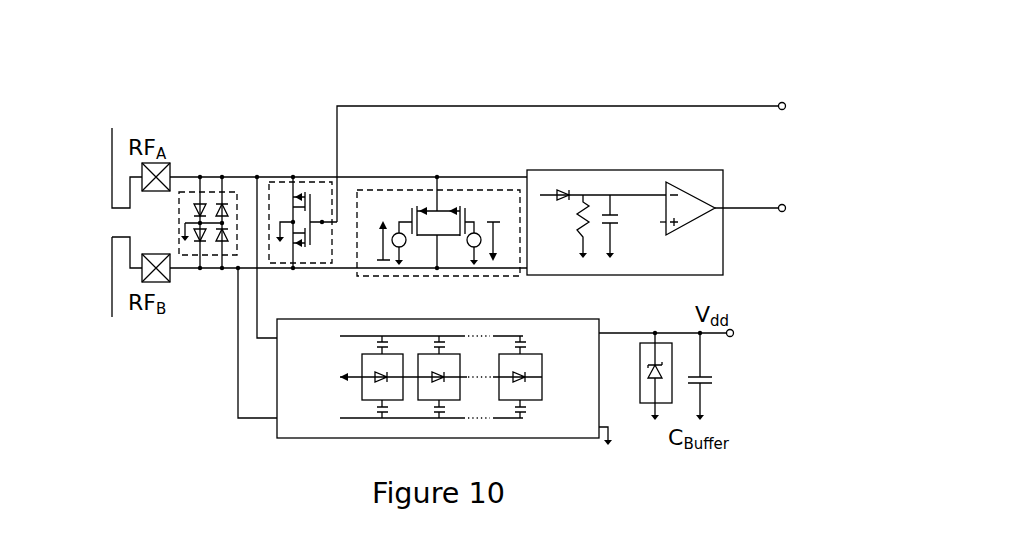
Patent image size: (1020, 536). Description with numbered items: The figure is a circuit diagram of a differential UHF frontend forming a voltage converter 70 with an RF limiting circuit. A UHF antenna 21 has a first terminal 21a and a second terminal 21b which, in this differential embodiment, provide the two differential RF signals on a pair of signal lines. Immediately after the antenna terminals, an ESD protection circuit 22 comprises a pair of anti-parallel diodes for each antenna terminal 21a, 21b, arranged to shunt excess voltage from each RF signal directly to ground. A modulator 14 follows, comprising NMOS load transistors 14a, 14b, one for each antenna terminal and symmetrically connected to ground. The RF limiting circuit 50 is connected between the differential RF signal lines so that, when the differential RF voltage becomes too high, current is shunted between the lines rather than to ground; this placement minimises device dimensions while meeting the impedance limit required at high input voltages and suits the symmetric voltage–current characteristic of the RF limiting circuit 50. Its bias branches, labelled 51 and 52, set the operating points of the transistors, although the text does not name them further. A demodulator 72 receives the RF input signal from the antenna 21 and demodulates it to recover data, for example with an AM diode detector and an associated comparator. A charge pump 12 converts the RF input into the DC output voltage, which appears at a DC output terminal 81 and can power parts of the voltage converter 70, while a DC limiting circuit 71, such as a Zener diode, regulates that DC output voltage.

The charge pump 12 is at (540, 319).
The modulator 14 is at (278, 181).
The NMOS load transistor 14a is at (317, 194).
The NMOS load transistor 14b is at (317, 245).
The UHF antenna 21 is at (93, 161).
The first terminal 21a is at (111, 174).
The second terminal 21b is at (111, 262).
The ESD protection circuit 22 is at (185, 191).
The RF limiting circuit 50 is at (500, 190).
The first bias current source 51 is at (404, 206).
The second bias current source 52 is at (472, 208).
The voltage converter 70 is at (529, 97).
The DC limiting circuit 71 is at (639, 357).
The demodulator 72 is at (583, 170).
The DC output terminal 81 is at (787, 209).